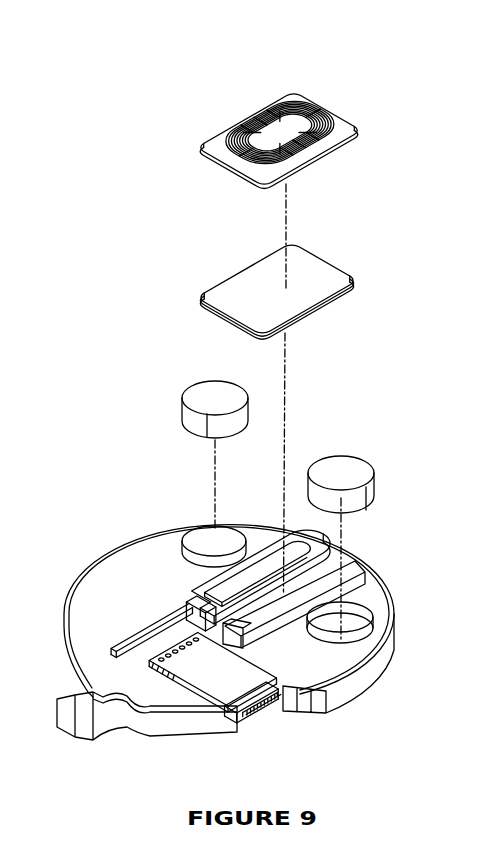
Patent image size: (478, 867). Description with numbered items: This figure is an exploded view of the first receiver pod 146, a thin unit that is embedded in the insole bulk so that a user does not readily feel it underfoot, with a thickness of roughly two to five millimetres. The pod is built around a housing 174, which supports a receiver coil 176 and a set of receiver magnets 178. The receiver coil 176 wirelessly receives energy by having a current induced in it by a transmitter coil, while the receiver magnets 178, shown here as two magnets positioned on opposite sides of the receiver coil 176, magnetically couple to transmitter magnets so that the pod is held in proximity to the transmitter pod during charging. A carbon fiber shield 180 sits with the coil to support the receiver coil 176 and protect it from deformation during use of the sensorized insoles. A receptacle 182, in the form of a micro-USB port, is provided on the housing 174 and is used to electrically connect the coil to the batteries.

The first receiver pod 146 is at (122, 104).
The housing 174 is at (250, 648).
The receiver coil 176 is at (325, 108).
The receiver magnets 178 is at (198, 390).
The carbon fiber shield 180 is at (325, 285).
The receptacle 182 is at (251, 702).